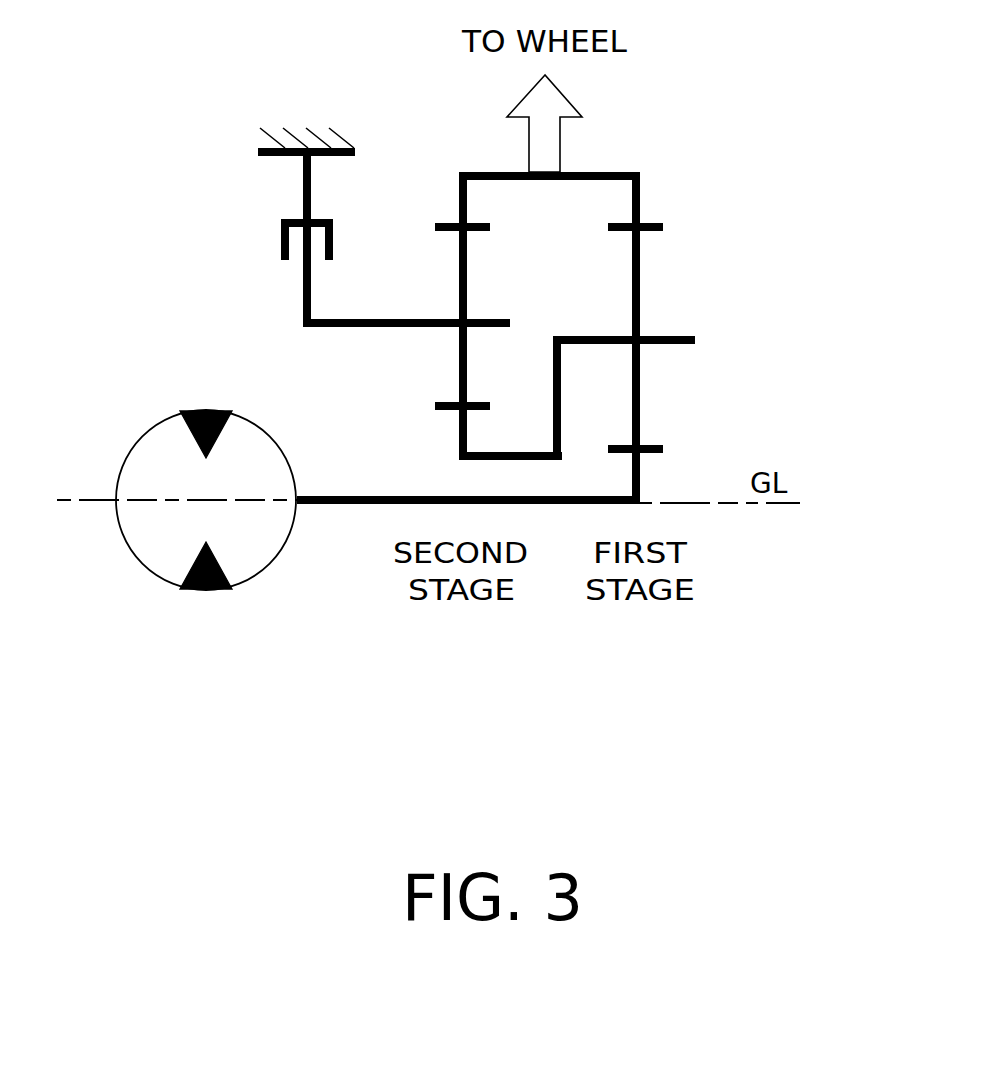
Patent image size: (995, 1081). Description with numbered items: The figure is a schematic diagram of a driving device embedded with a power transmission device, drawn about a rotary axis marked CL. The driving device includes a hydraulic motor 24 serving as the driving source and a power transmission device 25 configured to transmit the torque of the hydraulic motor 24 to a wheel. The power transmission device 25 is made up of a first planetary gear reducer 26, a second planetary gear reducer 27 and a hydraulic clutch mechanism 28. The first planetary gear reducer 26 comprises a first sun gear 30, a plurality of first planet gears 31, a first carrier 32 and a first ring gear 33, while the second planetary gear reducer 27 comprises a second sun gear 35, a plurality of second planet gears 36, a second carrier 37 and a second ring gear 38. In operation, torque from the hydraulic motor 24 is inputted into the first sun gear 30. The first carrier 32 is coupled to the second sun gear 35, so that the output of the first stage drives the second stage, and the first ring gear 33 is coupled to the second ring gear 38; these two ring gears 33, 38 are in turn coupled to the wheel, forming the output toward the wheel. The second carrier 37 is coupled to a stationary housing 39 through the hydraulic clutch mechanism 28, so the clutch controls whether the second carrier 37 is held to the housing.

The hydraulic motor 24 is at (145, 432).
The power transmission device 25 is at (557, 543).
The first planetary gear reducer 26 is at (702, 252).
The second planetary gear reducer 27 is at (421, 199).
The hydraulic clutch mechanism 28 is at (281, 238).
The first sun gear 30 is at (640, 480).
The first planet gears 31 is at (640, 372).
The first carrier 32 is at (683, 336).
The first ring gear 33 is at (618, 171).
The second sun gear 35 is at (459, 440).
The second planet gears 36 is at (468, 275).
The second carrier 37 is at (335, 328).
The second ring gear 38 is at (489, 170).
The stationary housing 39 is at (258, 149).